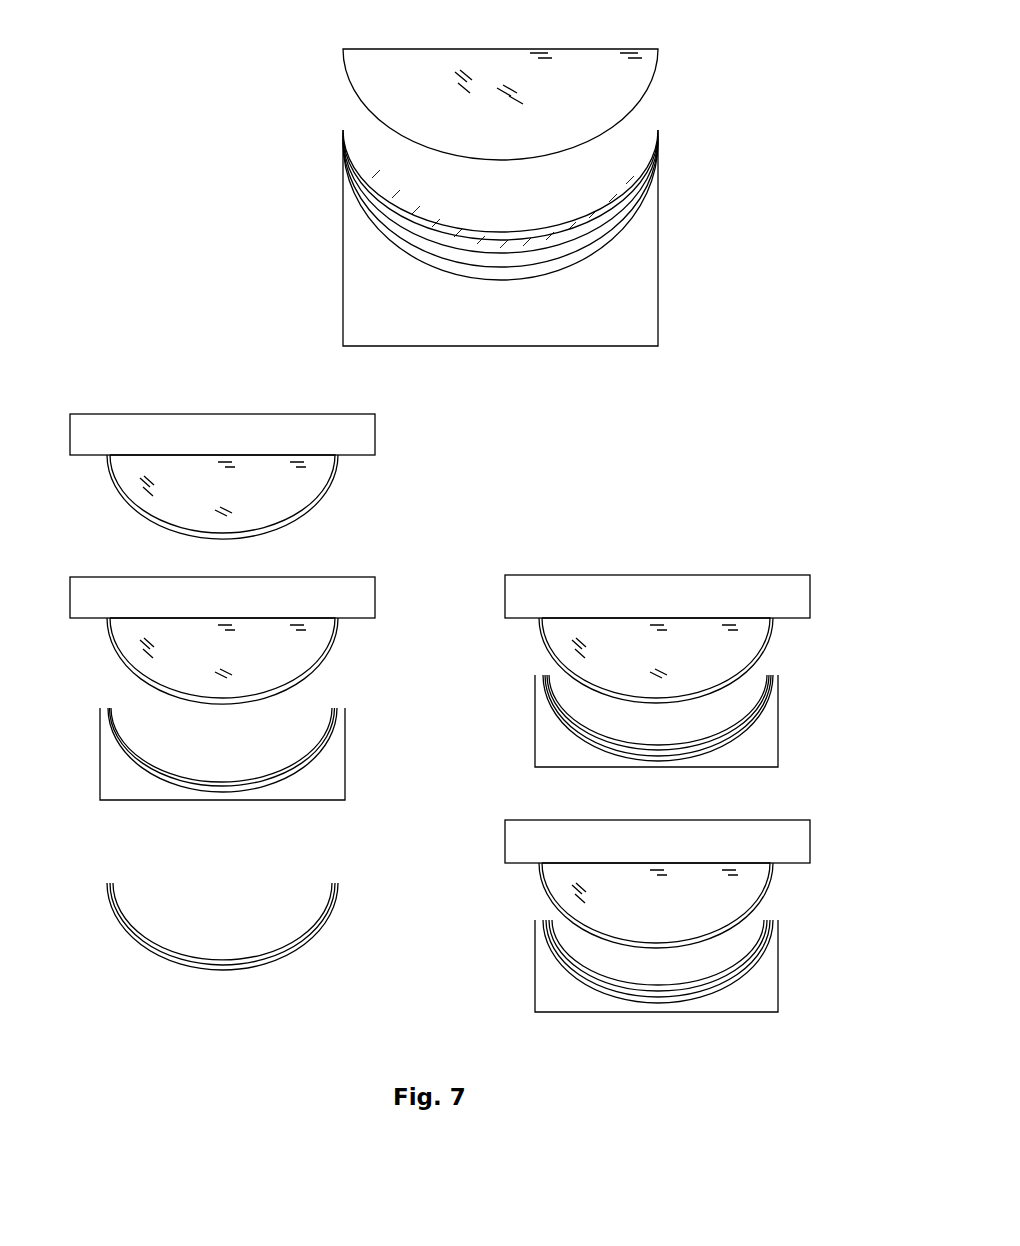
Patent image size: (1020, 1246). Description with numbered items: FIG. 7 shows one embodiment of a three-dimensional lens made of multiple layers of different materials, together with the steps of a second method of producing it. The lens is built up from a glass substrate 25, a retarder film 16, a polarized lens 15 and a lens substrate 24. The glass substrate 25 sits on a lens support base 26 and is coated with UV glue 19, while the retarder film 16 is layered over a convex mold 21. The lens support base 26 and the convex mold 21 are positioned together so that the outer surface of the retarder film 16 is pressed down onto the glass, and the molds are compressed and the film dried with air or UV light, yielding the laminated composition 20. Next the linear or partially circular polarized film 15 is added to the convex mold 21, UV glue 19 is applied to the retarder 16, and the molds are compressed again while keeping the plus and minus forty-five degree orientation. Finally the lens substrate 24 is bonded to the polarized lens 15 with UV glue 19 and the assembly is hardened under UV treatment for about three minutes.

The polarized lens 15 is at (655, 178).
The retarder film 16 is at (650, 212).
The UV glue 19 is at (335, 713).
The retarder-epoxy composition 20 is at (440, 943).
The convex mold 21 is at (642, 73).
The lens substrate 24 is at (652, 149).
The glass substrate 25 is at (628, 243).
The lens support base 26 is at (633, 316).